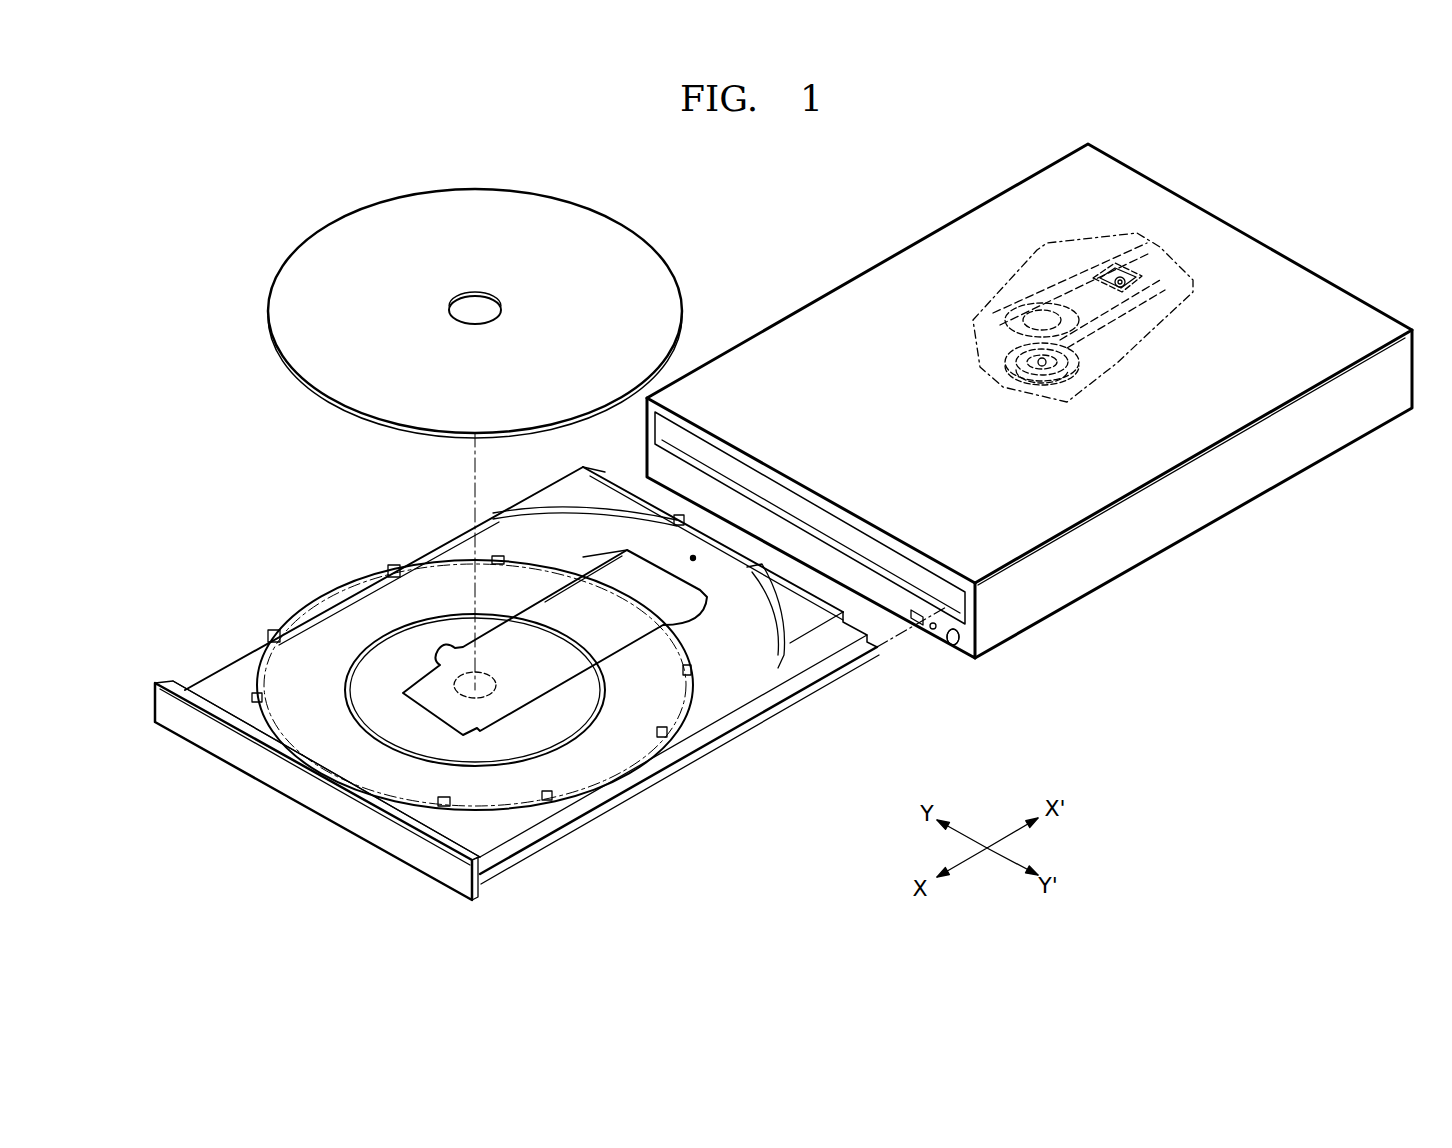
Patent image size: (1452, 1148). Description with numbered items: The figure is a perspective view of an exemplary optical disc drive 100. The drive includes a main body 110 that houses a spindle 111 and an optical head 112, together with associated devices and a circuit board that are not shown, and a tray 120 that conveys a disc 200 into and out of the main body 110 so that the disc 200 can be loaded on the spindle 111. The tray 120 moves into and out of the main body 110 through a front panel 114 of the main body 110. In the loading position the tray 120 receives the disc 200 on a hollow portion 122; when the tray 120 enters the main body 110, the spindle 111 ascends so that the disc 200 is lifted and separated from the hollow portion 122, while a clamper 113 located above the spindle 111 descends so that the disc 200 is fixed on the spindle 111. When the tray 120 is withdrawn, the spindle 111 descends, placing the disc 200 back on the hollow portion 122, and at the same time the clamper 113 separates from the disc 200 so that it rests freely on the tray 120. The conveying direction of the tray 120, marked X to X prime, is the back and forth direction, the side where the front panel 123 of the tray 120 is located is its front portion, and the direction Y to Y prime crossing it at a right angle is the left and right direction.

The optical disc drive 100 is at (1284, 157).
The main body 110 is at (851, 281).
The spindle 111 is at (1028, 357).
The optical head 112 is at (1118, 284).
The clamper 113 is at (1015, 322).
The front panel of the main body 114 is at (963, 652).
The tray 120 is at (538, 863).
The hollow portion 122 is at (578, 763).
The front panel of the tray 123 is at (425, 869).
The disc 200 is at (302, 268).